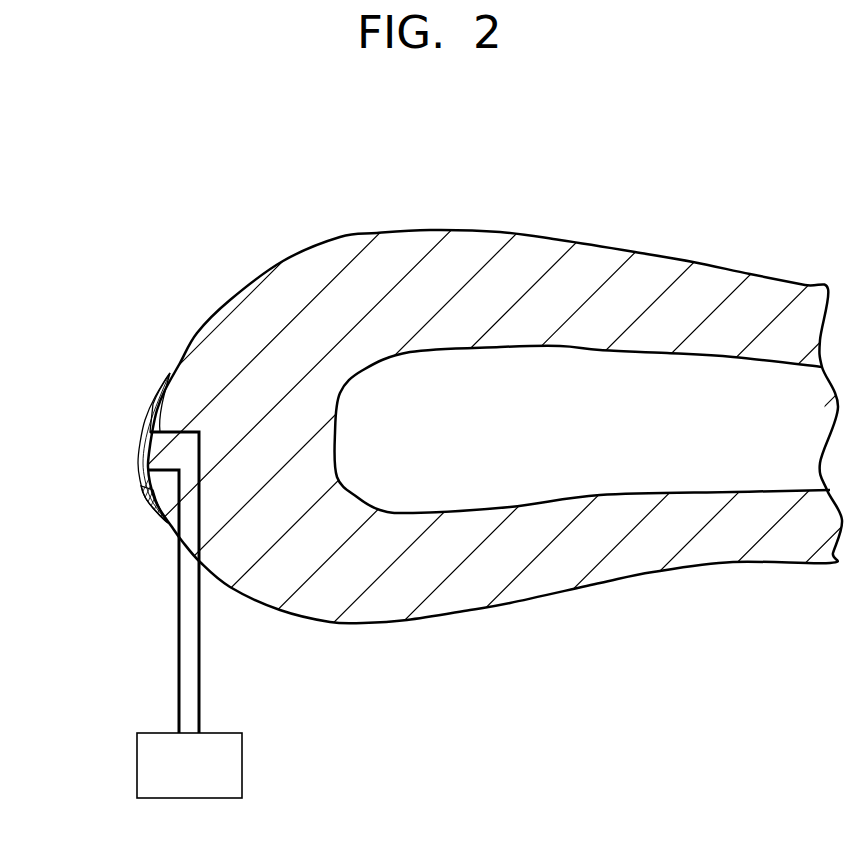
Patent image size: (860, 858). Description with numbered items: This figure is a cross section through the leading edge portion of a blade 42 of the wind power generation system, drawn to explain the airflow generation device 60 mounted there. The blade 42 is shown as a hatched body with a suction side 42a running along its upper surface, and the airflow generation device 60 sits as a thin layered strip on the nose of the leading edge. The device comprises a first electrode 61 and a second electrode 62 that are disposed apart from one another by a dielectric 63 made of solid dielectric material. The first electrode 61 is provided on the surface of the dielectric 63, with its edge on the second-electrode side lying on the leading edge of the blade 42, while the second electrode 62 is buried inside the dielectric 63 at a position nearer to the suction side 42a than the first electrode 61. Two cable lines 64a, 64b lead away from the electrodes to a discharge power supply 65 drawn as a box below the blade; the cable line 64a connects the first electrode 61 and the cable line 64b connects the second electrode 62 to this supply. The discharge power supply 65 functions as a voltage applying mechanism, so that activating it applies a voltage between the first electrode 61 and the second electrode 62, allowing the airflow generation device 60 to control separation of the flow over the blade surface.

The blade 42 is at (430, 385).
The suction side 42a is at (597, 239).
The airflow generation device 60 is at (170, 459).
The first electrode 61 is at (147, 465).
The second electrode 62 is at (148, 404).
The dielectric 63 is at (157, 507).
The cable line 64a is at (178, 655).
The cable line 64b is at (202, 680).
The discharge power supply 65 is at (157, 768).